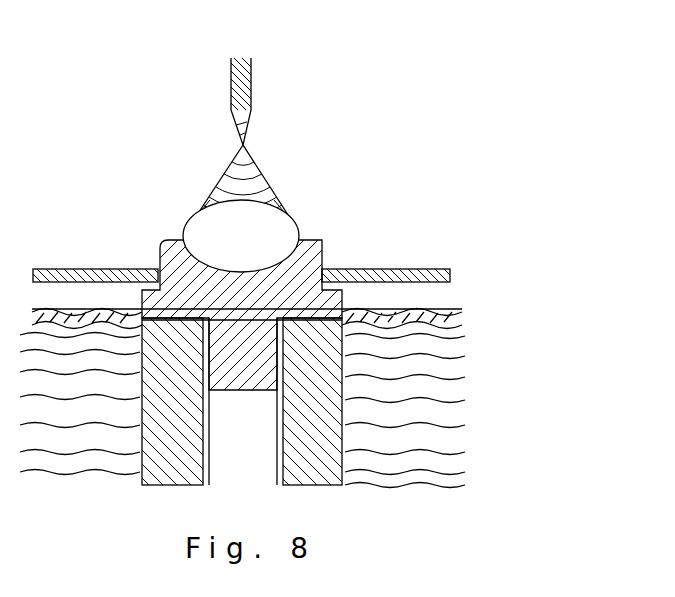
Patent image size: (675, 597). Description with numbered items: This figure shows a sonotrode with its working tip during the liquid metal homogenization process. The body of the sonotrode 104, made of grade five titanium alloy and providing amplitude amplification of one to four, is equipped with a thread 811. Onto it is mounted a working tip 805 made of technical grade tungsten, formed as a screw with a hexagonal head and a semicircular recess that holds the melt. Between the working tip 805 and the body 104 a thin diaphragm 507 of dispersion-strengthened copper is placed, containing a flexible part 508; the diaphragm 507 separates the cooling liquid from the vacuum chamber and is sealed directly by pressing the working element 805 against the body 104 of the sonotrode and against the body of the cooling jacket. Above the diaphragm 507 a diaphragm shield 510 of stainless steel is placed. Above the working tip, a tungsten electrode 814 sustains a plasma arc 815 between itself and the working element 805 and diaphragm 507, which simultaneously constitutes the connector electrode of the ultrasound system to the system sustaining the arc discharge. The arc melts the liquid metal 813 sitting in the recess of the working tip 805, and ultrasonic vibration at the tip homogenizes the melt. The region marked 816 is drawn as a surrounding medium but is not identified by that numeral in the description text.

The tungsten electrode 814 is at (253, 87).
The plasma arc 815 is at (263, 170).
The liquid metal 813 is at (305, 218).
The working tip 805 is at (325, 242).
The diaphragm shield 510 is at (445, 272).
The diaphragm 507 is at (369, 310).
The flexible part 508 is at (458, 328).
The body of the sonotrode 104 is at (344, 348).
The filler material 816 is at (420, 420).
The thread 811 is at (290, 474).